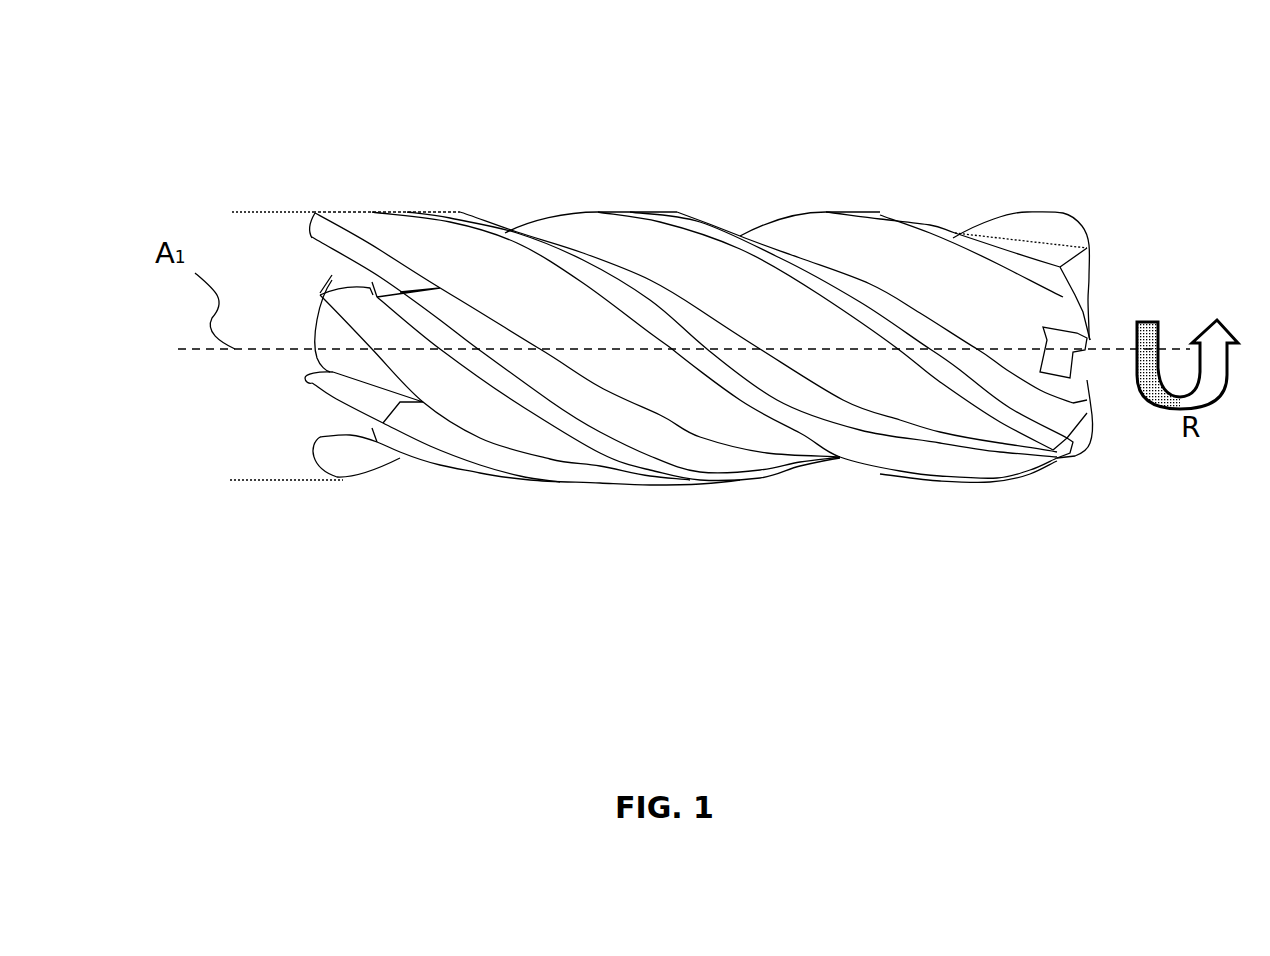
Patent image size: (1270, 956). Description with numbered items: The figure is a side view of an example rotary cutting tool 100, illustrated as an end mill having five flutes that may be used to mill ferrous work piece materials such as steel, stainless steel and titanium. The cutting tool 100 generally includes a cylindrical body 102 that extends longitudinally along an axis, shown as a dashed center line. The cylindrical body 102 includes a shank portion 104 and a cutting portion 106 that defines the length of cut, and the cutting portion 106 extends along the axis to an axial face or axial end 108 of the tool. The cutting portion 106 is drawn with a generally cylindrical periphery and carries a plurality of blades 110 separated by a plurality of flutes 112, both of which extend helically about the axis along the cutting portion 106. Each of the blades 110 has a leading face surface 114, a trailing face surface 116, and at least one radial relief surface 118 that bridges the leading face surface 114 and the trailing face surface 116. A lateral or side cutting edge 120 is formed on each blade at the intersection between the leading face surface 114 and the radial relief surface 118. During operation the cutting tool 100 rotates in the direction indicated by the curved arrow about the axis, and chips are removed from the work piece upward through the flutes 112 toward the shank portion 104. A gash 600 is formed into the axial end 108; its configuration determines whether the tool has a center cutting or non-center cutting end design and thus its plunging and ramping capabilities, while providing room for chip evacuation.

The rotary cutting tool 100 is at (709, 361).
The cylindrical body 102 is at (255, 240).
The shank portion 104 is at (250, 517).
The cutting portion 106 is at (955, 515).
The axial end 108 is at (1177, 277).
The blades 110 is at (595, 213).
The flutes 112 is at (512, 297).
The leading face surface 114 is at (697, 250).
The trailing face surface 116 is at (493, 420).
The radial relief surface 118 is at (627, 304).
The cutting edge 120 is at (730, 394).
The gash 600 is at (1080, 370).